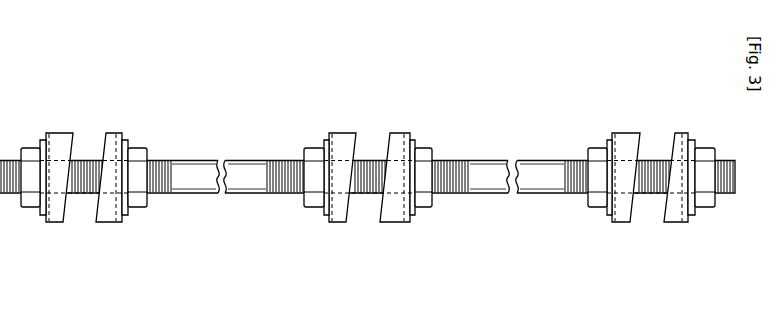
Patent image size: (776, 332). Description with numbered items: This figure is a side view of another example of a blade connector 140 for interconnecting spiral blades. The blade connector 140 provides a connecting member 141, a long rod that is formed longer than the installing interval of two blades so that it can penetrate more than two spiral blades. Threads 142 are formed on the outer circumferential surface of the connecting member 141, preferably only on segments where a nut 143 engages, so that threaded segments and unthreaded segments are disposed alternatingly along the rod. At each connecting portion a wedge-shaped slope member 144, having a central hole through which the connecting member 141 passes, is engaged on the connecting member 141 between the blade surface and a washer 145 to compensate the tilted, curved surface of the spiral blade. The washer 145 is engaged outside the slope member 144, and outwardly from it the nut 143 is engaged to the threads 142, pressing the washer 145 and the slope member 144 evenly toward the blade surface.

The blade connector 140 is at (472, 99).
The connecting member 141 is at (188, 162).
The threads 142 is at (474, 161).
The nut 143 is at (304, 147).
The slope member 144 is at (333, 221).
The washer 145 is at (324, 141).